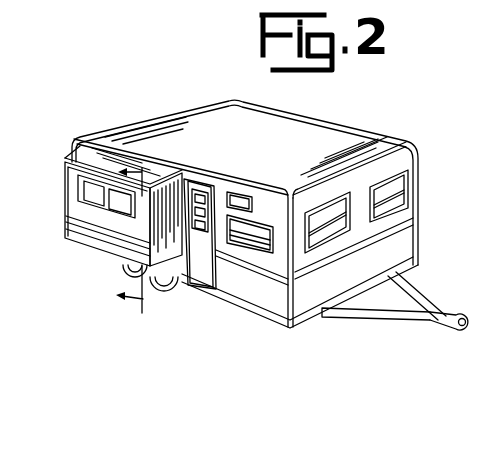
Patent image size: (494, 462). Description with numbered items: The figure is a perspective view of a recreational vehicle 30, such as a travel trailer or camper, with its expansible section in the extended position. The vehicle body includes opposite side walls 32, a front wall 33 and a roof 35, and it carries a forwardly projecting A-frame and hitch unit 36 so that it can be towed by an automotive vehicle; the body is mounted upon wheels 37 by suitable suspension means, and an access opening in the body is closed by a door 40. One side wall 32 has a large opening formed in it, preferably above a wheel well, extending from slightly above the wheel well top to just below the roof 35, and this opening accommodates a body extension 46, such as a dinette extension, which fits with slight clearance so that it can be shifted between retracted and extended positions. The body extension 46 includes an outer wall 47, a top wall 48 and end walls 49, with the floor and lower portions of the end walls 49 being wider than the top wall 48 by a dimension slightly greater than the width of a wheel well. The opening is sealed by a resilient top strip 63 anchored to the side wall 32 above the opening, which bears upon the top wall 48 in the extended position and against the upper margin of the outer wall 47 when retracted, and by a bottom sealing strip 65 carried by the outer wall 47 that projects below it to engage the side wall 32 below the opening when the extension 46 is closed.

The recreational vehicle 30 is at (354, 126).
The side wall 32 is at (264, 297).
The front wall 33 is at (308, 307).
The roof 35 is at (190, 120).
The A-frame and hitch unit 36 is at (425, 318).
The wheel 37 is at (167, 289).
The door 40 is at (202, 274).
The body extension 46 is at (56, 198).
The outer wall 47 is at (94, 237).
The top wall 48 is at (82, 157).
The end wall 49 is at (166, 197).
The top strip 63 is at (97, 156).
The bottom sealing strip 65 is at (100, 257).